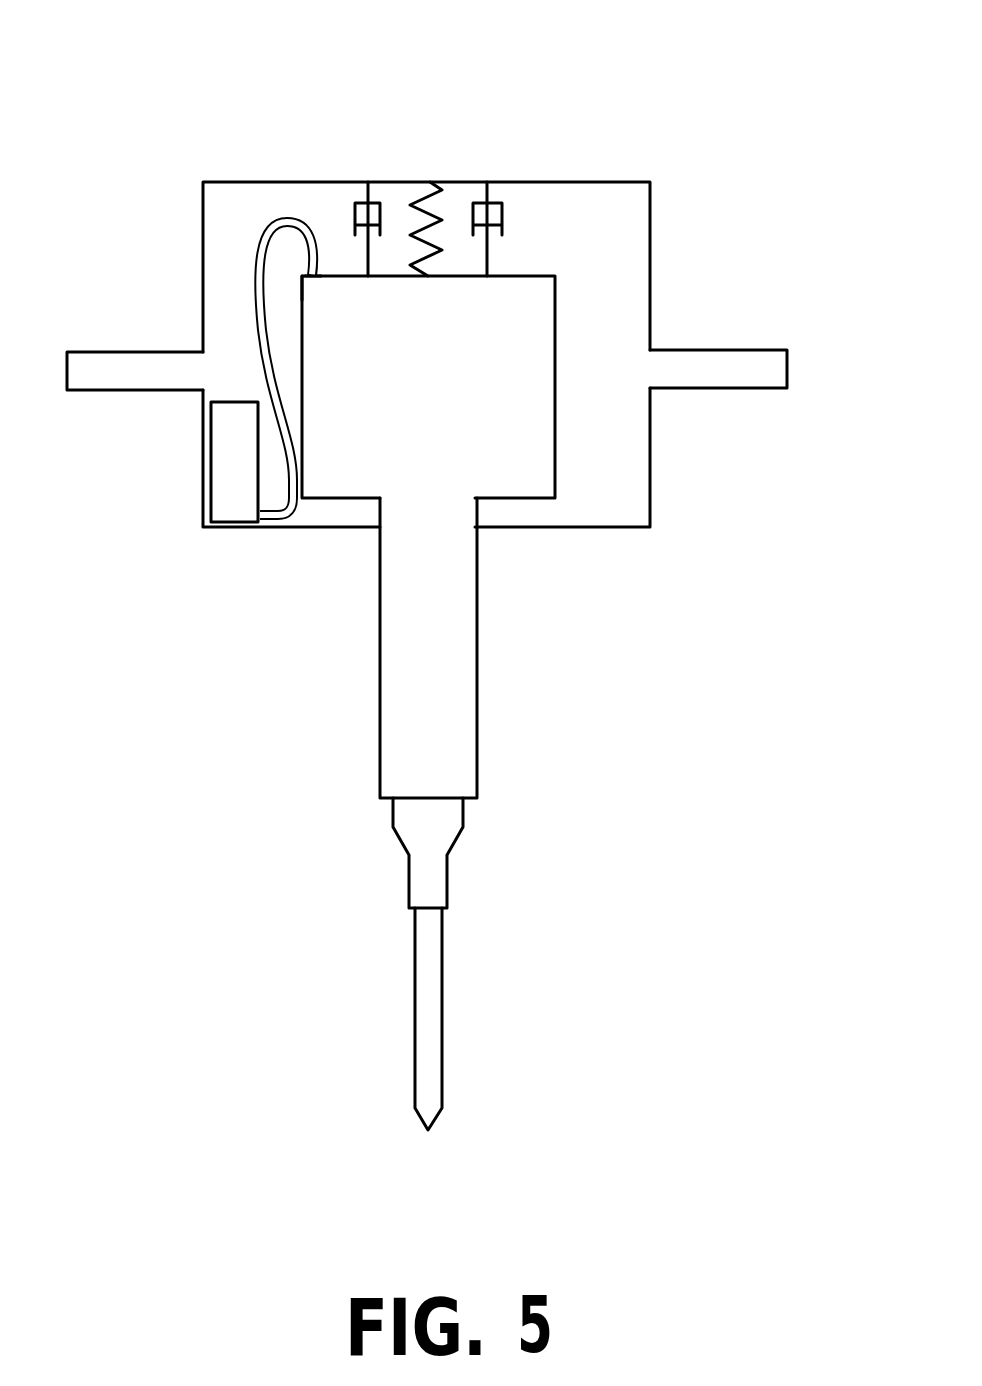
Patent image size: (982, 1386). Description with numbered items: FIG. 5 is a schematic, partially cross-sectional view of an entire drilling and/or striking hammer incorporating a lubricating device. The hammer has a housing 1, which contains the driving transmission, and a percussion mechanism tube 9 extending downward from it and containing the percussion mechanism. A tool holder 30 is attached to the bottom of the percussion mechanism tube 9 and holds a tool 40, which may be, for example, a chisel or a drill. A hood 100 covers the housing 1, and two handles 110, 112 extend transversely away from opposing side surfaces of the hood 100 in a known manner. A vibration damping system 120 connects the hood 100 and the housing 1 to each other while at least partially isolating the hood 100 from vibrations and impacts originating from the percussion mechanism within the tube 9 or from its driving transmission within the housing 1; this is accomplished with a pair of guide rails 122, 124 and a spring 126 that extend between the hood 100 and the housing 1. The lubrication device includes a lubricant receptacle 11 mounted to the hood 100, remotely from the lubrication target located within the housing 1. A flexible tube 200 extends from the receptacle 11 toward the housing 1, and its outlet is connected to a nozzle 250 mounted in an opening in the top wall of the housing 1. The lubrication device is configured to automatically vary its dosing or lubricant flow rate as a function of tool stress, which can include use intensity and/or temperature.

The hood 100 is at (652, 261).
The handle 110 is at (132, 367).
The handle 112 is at (752, 360).
The lubricant receptacle 11 is at (224, 470).
The housing 1 is at (450, 432).
The percussion mechanism tube 9 is at (448, 592).
The tool holder 30 is at (428, 877).
The tool 40 is at (428, 995).
The vibration damping system 120 is at (465, 147).
The guide rail 122 is at (362, 210).
The guide rail 124 is at (492, 213).
The spring 126 is at (437, 205).
The flexible tube 200 is at (254, 228).
The nozzle 250 is at (322, 272).